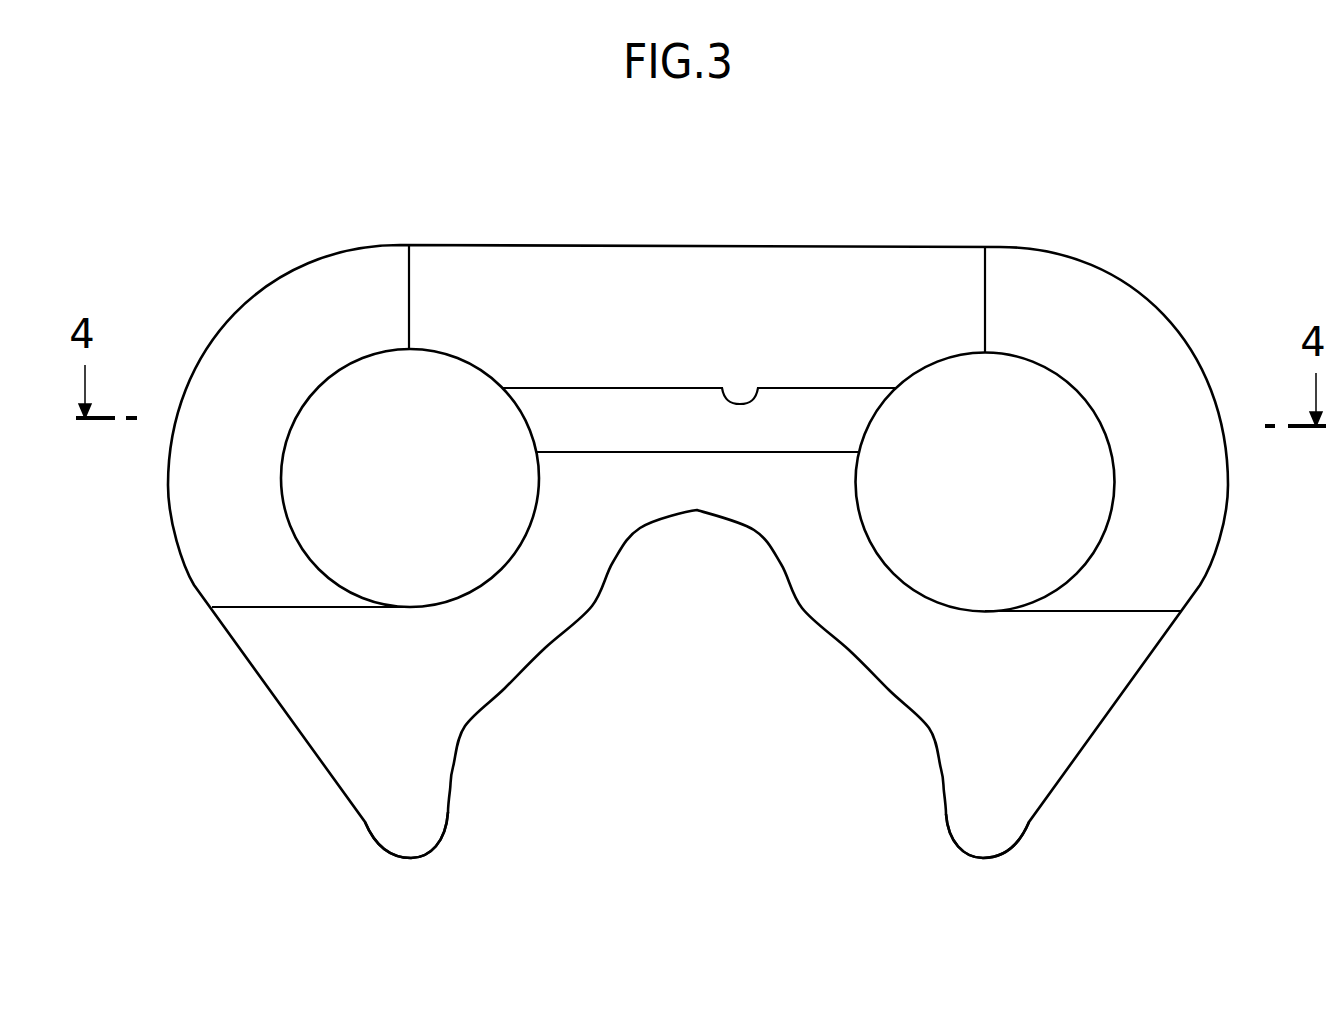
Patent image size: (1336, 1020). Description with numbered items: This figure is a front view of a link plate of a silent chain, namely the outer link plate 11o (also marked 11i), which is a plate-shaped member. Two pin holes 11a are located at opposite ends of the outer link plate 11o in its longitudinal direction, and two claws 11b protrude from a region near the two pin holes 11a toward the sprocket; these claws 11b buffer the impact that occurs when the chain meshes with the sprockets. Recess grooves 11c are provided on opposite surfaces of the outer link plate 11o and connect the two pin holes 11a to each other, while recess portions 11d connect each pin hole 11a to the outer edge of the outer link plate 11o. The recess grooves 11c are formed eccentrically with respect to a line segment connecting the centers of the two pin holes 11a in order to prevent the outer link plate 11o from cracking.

The outer link plate 11o is at (748, 241).
The inner periphery of band 11i is at (698, 551).
The recess portion 11d is at (408, 292).
The pin hole 11a is at (333, 377).
The recess groove 11c is at (757, 390).
The claw 11b is at (425, 828).